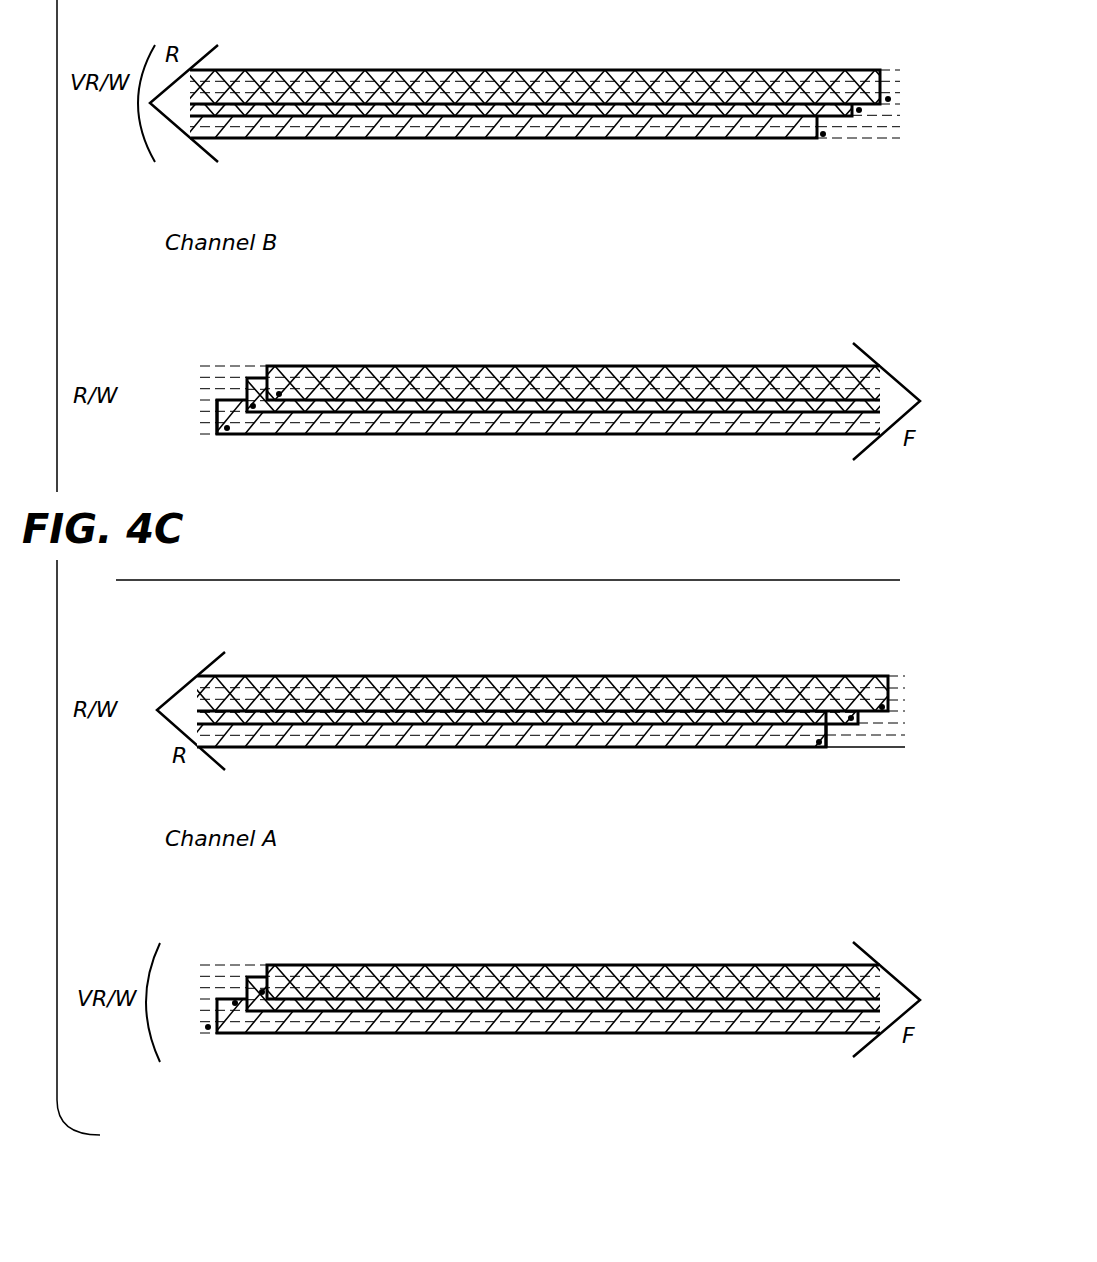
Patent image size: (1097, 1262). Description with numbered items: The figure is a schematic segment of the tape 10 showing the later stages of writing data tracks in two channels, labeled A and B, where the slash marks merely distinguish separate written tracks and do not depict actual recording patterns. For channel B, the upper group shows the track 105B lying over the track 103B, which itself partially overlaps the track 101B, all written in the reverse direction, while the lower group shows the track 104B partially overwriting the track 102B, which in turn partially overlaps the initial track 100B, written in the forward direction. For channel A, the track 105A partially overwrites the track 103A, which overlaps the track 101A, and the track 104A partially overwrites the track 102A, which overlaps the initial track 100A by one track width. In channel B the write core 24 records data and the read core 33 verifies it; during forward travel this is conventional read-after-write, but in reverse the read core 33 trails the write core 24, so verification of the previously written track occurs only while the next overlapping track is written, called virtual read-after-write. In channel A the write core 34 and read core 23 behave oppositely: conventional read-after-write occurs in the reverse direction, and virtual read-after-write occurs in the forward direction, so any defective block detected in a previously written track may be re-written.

The tape 10 is at (845, 140).
The read core 23 is at (812, 750).
The write core 24 is at (215, 415).
The read core 33 is at (228, 431).
The write core 34 is at (828, 750).
The initial track 100A is at (310, 1027).
The initial track 100B is at (312, 427).
The track 101A is at (743, 742).
The track 101B is at (787, 130).
The track 102A is at (257, 978).
The track 102B is at (255, 378).
The track 103A is at (597, 714).
The track 103B is at (617, 114).
The track 104A is at (340, 966).
The track 104B is at (340, 367).
The track 105A is at (678, 676).
The track 105B is at (670, 72).